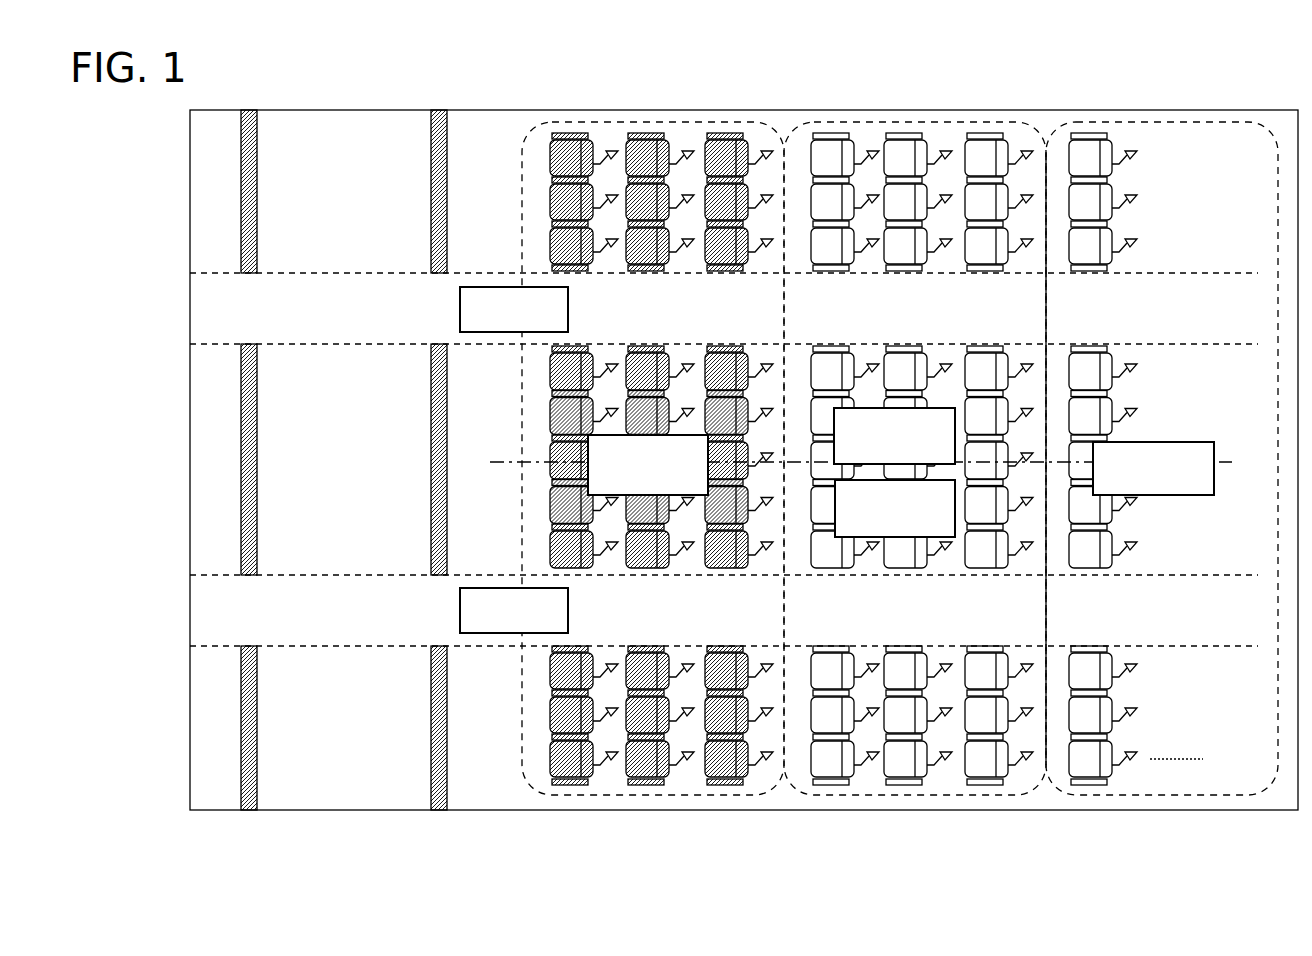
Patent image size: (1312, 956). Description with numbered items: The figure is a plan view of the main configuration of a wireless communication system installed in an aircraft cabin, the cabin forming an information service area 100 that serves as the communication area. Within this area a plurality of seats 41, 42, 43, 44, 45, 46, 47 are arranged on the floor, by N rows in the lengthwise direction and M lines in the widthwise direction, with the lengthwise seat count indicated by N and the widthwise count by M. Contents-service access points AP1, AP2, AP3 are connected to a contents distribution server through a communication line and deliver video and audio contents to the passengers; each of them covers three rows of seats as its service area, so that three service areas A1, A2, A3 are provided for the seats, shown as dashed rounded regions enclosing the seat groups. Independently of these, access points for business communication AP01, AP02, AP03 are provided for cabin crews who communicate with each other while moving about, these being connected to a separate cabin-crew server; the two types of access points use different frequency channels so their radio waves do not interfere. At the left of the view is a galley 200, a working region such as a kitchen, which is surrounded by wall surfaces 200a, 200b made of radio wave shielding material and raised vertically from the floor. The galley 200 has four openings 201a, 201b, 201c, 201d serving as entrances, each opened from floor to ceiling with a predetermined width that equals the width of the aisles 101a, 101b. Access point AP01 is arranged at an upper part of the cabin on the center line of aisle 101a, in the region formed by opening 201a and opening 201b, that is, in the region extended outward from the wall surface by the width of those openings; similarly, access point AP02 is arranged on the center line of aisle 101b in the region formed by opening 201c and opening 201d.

The information service area 100 is at (485, 148).
The galley 200 is at (340, 138).
The wall surface 200a is at (438, 470).
The wall surface 200b is at (254, 541).
The opening 201a is at (430, 303).
The opening 201b is at (252, 306).
The opening 201c is at (420, 605).
The opening 201d is at (288, 621).
The aisle 101a is at (1155, 296).
The aisle 101b is at (1168, 614).
The seat 41 is at (584, 488).
The seat 42 is at (660, 488).
The seat 43 is at (739, 488).
The seat 44 is at (845, 488).
The seat 45 is at (918, 488).
The seat 46 is at (999, 488).
The seat 47 is at (1103, 488).
The service area A1 is at (653, 440).
The service area A2 is at (915, 440).
The service area A3 is at (1162, 440).
The access point AP01 is at (514, 309).
The access point AP02 is at (514, 610).
The access point AP03 is at (894, 436).
The access point AP1 is at (648, 465).
The access point AP2 is at (895, 508).
The access point AP3 is at (1153, 468).
The lines of seats M is at (875, 465).
The rows of seats N is at (1188, 759).